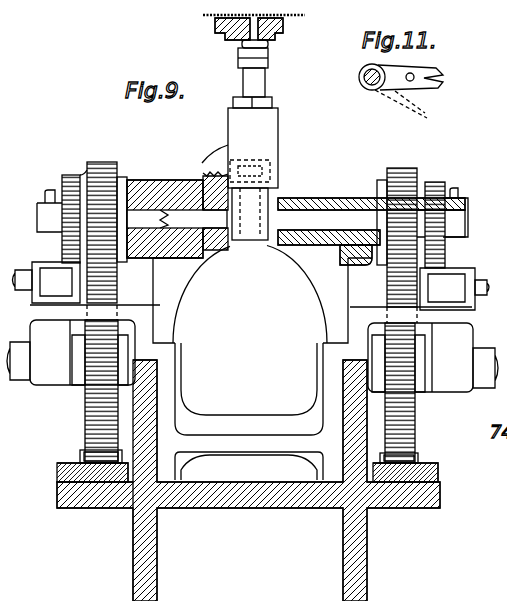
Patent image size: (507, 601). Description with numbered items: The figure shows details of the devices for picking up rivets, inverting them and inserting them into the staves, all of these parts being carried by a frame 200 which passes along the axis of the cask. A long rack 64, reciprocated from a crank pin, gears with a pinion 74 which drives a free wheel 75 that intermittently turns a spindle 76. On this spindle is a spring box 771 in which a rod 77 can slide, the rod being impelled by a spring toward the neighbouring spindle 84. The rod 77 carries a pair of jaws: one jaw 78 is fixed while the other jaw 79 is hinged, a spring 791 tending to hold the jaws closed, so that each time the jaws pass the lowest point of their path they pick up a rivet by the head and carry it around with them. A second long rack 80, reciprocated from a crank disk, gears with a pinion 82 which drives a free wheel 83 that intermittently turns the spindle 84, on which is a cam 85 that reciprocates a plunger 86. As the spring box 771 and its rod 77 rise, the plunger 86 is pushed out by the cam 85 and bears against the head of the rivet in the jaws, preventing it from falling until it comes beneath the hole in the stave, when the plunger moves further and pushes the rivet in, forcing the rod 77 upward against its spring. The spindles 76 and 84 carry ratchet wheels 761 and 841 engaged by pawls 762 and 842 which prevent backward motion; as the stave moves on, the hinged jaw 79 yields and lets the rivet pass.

In FIG. 9, the frame 200 is at (262, 503).
In FIG. 9, the long rack 64 is at (82, 455).
In FIG. 9, the second long rack 80 is at (420, 458).
In FIG. 9, the spring box 771 is at (240, 148).
In FIG. 9, the plunger 86 is at (262, 175).
In FIG. 9, the cam 85 is at (254, 232).
In FIG. 9, the fixed jaw 78 is at (245, 46).
In FIG. 11, the fixed jaw 78 is at (408, 73).
In FIG. 9, the hinged jaw 79 is at (260, 60).
In FIG. 11, the hinged jaw 79 is at (420, 85).
In FIG. 9, the rod 77 is at (258, 85).
In FIG. 9, the spindle 84 is at (312, 217).
In FIG. 9, the spindle 76 is at (147, 190).
In FIG. 9, the free wheel 75 is at (103, 175).
In FIG. 9, the ratchet wheel 761 is at (69, 183).
In FIG. 9, the pawl 762 is at (66, 277).
In FIG. 9, the pinion 74 is at (98, 385).
In FIG. 9, the free wheel 83 is at (397, 178).
In FIG. 9, the ratchet wheel 841 is at (437, 185).
In FIG. 9, the pawl 842 is at (433, 285).
In FIG. 9, the pinion 82 is at (400, 395).
In FIG. 11, the spring 791 is at (366, 89).